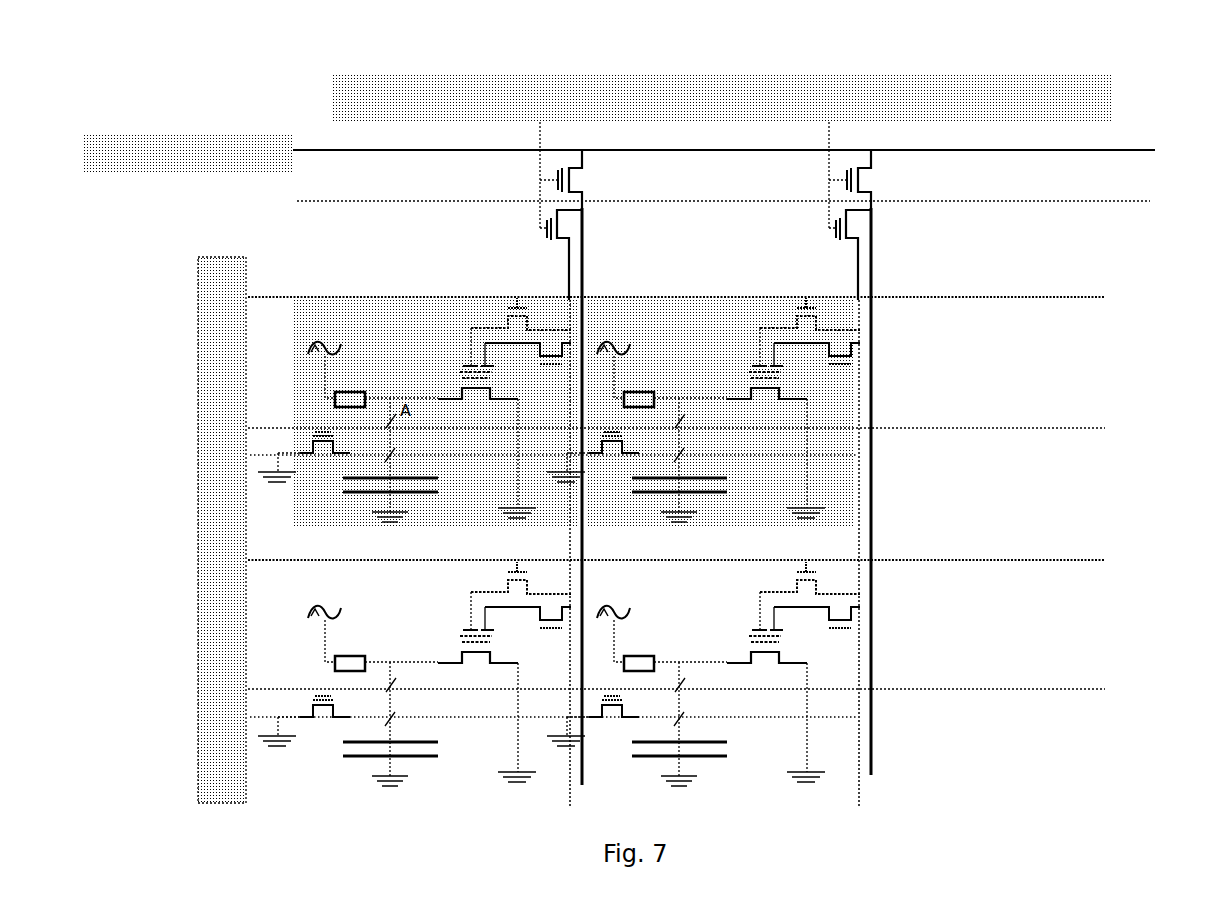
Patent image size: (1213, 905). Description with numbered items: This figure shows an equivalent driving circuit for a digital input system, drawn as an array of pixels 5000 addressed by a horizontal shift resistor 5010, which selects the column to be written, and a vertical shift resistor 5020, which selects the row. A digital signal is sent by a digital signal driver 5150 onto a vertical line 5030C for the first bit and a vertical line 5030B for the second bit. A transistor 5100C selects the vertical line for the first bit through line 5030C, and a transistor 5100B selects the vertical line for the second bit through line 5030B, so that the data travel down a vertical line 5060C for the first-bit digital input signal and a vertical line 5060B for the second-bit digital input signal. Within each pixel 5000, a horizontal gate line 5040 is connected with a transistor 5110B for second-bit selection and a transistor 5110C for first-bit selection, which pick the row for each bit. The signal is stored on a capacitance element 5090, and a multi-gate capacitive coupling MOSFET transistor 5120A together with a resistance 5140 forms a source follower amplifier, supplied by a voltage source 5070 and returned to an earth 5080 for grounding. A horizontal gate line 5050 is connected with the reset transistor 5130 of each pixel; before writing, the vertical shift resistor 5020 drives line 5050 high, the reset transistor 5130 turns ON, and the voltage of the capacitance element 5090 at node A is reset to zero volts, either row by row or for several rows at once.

The pixel 5000 is at (330, 770).
The horizontal shift resistor 5010 is at (1112, 108).
The vertical shift resistor 5020 is at (198, 325).
The vertical line 5030B is at (1048, 200).
The vertical line 5030C is at (1105, 150).
The horizontal gate line 5040 is at (1088, 300).
The horizontal gate line 5050 is at (1085, 428).
The vertical line 5060B is at (575, 292).
The vertical line 5060C is at (597, 584).
The voltage source 5070 is at (336, 342).
The earth 5080 is at (273, 486).
The capacitance element 5090 is at (438, 484).
The transistor 5100B is at (598, 229).
The transistor 5100C is at (588, 181).
The transistor 5110B is at (512, 306).
The transistor 5110C is at (542, 366).
The multi-gate capacitive coupling MOSFET transistor 5120A is at (460, 360).
The reset transistor 5130 is at (335, 458).
The resistance 5140 is at (355, 392).
The digital signal driver 5150 is at (266, 134).